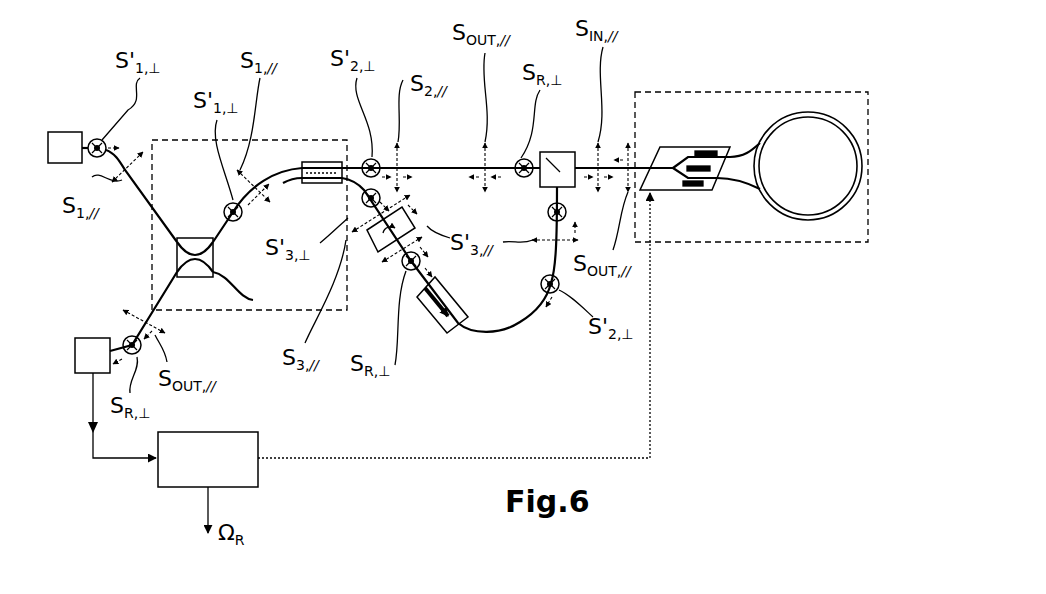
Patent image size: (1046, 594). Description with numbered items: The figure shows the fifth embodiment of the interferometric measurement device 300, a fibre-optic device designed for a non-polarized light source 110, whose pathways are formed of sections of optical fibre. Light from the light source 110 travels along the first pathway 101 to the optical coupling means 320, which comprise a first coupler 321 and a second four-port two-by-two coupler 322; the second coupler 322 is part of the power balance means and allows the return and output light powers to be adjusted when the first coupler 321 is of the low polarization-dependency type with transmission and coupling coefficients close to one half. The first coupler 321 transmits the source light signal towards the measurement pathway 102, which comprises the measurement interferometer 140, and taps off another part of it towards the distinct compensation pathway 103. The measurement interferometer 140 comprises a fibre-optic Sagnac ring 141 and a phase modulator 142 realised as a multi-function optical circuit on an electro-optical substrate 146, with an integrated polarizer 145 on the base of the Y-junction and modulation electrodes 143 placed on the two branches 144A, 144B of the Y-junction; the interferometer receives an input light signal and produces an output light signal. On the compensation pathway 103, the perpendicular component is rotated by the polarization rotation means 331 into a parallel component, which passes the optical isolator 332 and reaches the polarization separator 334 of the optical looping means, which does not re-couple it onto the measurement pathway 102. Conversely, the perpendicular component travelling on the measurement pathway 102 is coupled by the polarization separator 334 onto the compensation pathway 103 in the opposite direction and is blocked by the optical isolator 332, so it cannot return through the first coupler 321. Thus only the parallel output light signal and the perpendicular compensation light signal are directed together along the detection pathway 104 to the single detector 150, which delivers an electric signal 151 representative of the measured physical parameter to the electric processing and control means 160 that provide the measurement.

The light source 110 is at (66, 130).
The first pathway 101 is at (142, 192).
The optical coupling means 320 is at (177, 137).
The first coupler 321 is at (193, 278).
The second four-port two-by-two coupler 322 is at (327, 161).
The detection pathway 104 is at (117, 346).
The detector 150 is at (98, 337).
The electric signal 151 is at (93, 435).
The electric processing and control means 160 is at (180, 488).
The measurement pathway 102 is at (435, 167).
The polarization separator 334 is at (557, 152).
The compensation pathway 103 is at (500, 333).
The polarization rotation means 331 is at (375, 252).
The optical isolator 332 is at (437, 324).
The measurement interferometer 140 is at (812, 250).
The integrated polarizer 145 is at (661, 191).
The electro-optical substrate 146 is at (673, 152).
The branch of the Y-junction 144A is at (696, 151).
The branch of the Y-junction 144B is at (672, 190).
The phase modulator 142 is at (732, 150).
The modulation electrodes 143 is at (735, 182).
The fibre-optic Sagnac ring 141 is at (803, 112).
The interferometric measurement device 300 is at (676, 437).